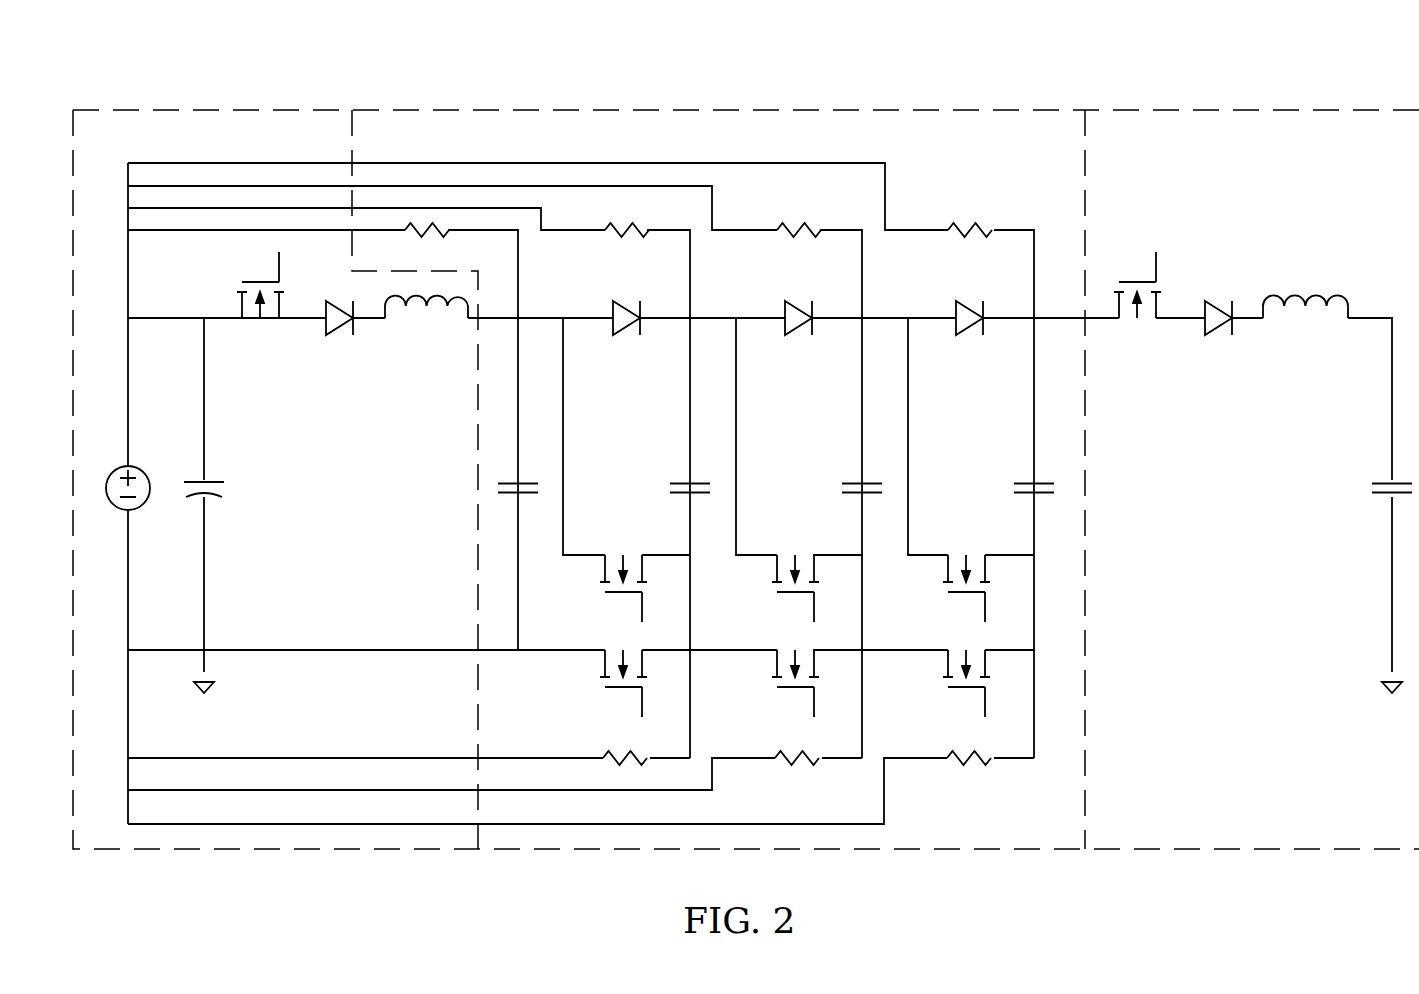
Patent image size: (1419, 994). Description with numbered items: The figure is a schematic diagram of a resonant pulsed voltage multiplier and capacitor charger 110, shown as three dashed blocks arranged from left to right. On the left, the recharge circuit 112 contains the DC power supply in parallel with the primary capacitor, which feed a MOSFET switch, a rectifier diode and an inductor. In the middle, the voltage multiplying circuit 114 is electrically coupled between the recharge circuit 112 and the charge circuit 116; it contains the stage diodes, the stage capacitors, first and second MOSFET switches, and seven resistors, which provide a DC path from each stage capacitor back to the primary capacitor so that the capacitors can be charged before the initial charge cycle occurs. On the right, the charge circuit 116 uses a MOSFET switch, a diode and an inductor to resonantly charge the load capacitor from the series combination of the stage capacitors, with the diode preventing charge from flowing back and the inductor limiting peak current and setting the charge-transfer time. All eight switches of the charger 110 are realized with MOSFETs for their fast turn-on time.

The resonant pulsed voltage multiplier and capacitor charger 110 is at (1213, 57).
The recharge circuit 112 is at (281, 110).
The voltage multiplying circuit 114 is at (810, 110).
The charge circuit 116 is at (1300, 110).